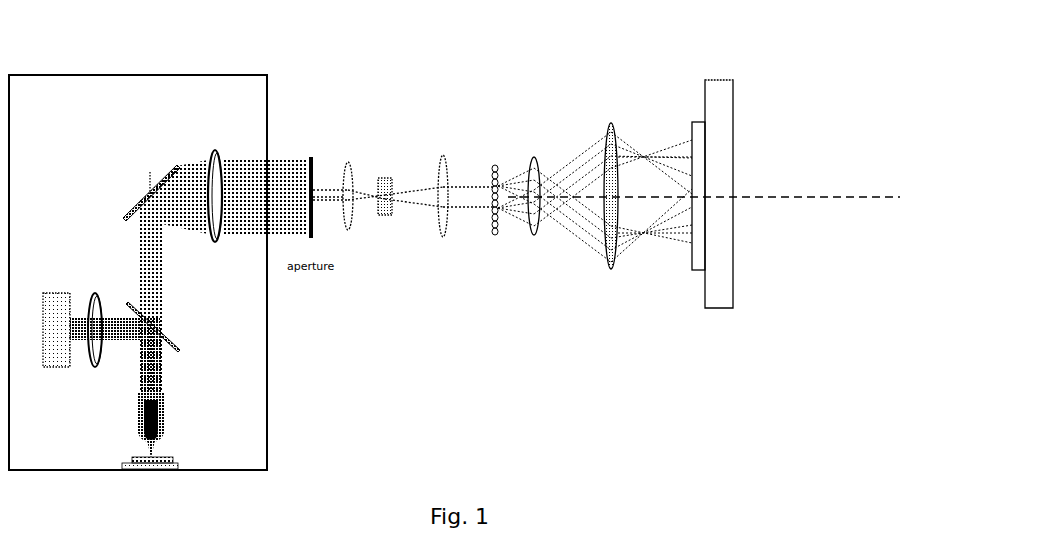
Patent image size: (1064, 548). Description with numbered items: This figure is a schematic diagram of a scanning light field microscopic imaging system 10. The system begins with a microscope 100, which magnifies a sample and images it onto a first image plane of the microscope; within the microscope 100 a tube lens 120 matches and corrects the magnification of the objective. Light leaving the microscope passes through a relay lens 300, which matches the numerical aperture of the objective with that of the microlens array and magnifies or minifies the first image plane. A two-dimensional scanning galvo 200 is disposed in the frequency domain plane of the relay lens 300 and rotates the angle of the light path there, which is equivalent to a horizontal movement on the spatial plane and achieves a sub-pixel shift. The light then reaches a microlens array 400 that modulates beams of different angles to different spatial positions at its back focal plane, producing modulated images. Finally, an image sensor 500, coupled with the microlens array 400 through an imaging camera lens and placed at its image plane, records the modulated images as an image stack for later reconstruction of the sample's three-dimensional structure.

The scanning light field microscopic imaging system 10 is at (516, 63).
The microscope 100 is at (160, 54).
The tube lens 120 is at (192, 122).
The 2D scanning galvo 200 is at (400, 255).
The relay lens 300 is at (388, 125).
The microlens array 400 is at (500, 257).
The image sensor 500 is at (729, 337).